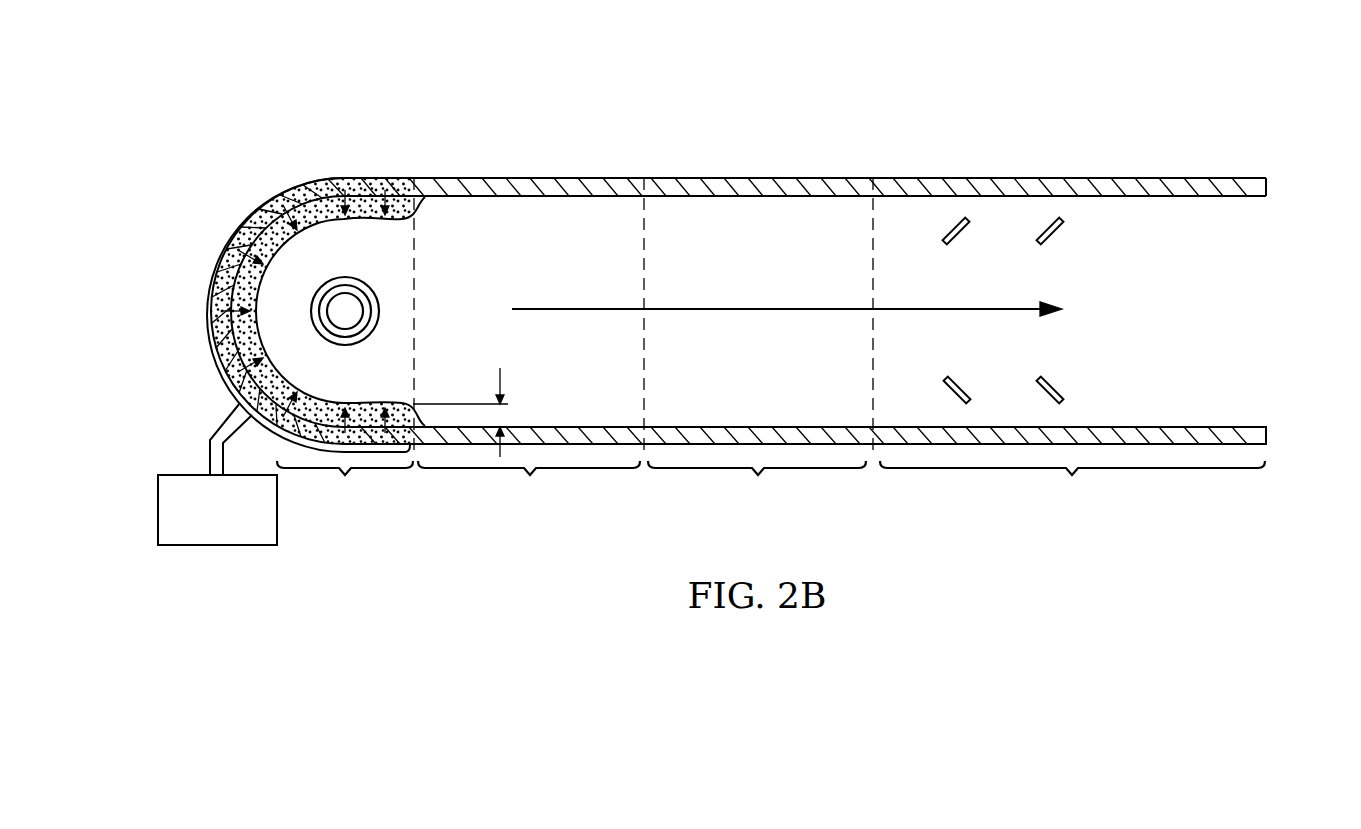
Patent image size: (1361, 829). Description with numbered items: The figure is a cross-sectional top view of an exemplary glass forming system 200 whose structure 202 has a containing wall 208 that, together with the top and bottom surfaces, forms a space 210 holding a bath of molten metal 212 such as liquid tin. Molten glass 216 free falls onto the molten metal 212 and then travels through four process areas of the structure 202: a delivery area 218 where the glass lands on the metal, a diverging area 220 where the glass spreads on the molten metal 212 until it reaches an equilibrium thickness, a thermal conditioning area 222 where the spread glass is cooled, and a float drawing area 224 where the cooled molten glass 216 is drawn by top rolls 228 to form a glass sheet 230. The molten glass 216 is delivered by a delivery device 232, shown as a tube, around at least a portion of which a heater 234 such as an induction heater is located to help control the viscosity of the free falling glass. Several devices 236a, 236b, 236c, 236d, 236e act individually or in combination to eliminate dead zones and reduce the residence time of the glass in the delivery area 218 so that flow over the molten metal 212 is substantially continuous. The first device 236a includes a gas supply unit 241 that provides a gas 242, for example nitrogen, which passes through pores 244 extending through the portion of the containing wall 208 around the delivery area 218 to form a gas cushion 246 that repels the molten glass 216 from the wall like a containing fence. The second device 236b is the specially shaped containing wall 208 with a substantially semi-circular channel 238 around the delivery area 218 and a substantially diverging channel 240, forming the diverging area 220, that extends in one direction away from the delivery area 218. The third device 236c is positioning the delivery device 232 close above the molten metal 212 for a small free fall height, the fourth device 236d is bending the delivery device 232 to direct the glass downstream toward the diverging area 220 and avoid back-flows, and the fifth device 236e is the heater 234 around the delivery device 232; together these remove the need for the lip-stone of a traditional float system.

The glass forming system 200 is at (1117, 108).
The structure 202 is at (1266, 185).
The containing wall 208 is at (592, 178).
The space 210 is at (730, 207).
The molten metal 212 is at (267, 237).
The molten glass 216 is at (262, 326).
The delivery area 218 is at (345, 485).
The diverging area 220 is at (529, 485).
The thermal conditioning area 222 is at (757, 485).
The float drawing area 224 is at (1072, 485).
The top rolls 228 is at (965, 240).
The glass sheet 230 is at (1175, 319).
The delivery device 232 is at (342, 329).
The heater 234 is at (342, 277).
The first device 236a is at (210, 390).
The second device 236b is at (442, 168).
The third device 236c is at (377, 287).
The fourth device 236d is at (385, 335).
The fifth delivery device 236e is at (390, 312).
The semi-circular channel 238 is at (252, 207).
The diverging channel 240 is at (523, 190).
The gas supply unit 241 is at (197, 526).
The gas 242 is at (285, 205).
The pores 244 is at (327, 187).
The gas cushion 246 is at (505, 382).